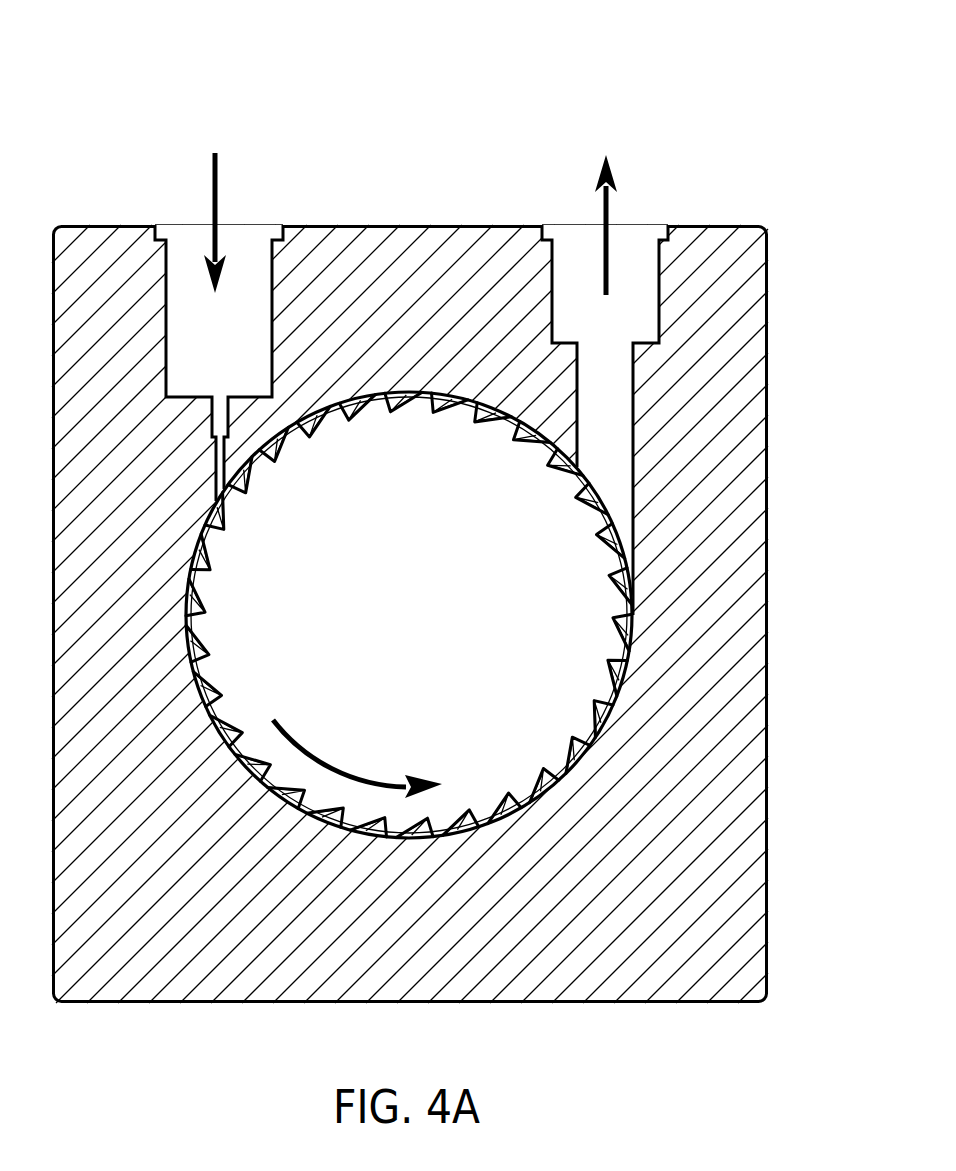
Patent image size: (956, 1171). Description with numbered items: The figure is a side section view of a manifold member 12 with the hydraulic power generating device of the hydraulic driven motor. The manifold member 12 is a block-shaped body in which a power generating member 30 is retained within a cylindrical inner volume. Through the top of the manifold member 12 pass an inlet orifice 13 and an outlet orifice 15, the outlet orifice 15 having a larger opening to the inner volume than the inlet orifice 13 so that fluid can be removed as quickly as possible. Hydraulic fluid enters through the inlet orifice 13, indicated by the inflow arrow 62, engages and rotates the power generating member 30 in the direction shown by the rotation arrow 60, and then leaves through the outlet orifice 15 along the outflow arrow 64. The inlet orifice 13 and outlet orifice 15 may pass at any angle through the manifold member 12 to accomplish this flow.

The manifold member 12 is at (703, 97).
The inlet orifice 13 is at (222, 410).
The outlet orifice 15 is at (615, 390).
The power generating member 30 is at (410, 540).
The rotation direction arrow 60 is at (335, 770).
The inlet flow arrow 62 is at (218, 182).
The outlet flow arrow 64 is at (603, 212).